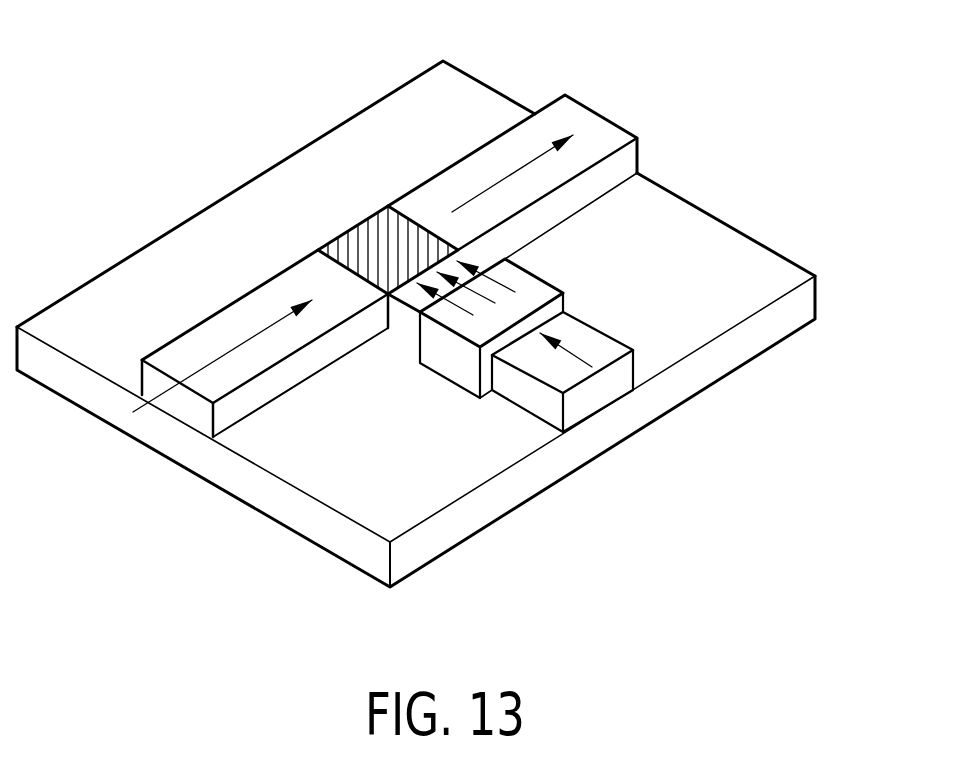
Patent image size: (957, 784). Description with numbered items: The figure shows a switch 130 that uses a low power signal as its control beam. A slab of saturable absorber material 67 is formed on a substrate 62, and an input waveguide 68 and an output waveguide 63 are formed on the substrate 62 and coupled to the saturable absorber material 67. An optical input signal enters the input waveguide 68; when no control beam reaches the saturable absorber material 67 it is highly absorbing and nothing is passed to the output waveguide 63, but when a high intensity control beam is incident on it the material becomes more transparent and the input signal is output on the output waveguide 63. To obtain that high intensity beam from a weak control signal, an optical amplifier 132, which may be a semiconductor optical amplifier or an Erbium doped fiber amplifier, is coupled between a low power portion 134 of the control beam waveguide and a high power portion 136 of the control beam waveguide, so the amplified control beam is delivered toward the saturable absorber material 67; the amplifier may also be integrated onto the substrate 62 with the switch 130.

The switch 130 is at (125, 165).
The substrate 62 is at (732, 348).
The output waveguide 63 is at (600, 181).
The saturable absorber material 67 is at (378, 242).
The input waveguide 68 is at (237, 408).
The optical amplifier 132 is at (540, 285).
The low power portion of control beam waveguide 134 is at (547, 407).
The high power portion of control beam waveguide 136 is at (397, 327).